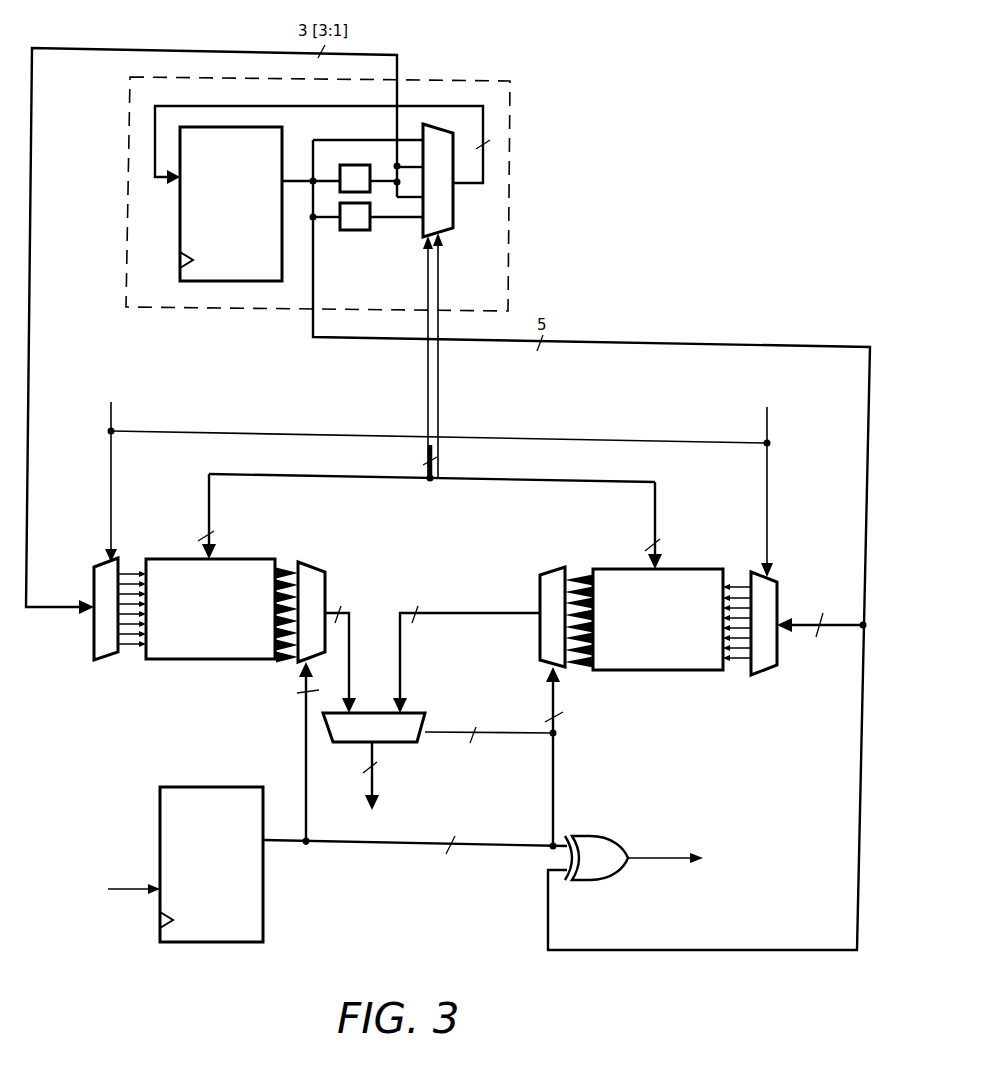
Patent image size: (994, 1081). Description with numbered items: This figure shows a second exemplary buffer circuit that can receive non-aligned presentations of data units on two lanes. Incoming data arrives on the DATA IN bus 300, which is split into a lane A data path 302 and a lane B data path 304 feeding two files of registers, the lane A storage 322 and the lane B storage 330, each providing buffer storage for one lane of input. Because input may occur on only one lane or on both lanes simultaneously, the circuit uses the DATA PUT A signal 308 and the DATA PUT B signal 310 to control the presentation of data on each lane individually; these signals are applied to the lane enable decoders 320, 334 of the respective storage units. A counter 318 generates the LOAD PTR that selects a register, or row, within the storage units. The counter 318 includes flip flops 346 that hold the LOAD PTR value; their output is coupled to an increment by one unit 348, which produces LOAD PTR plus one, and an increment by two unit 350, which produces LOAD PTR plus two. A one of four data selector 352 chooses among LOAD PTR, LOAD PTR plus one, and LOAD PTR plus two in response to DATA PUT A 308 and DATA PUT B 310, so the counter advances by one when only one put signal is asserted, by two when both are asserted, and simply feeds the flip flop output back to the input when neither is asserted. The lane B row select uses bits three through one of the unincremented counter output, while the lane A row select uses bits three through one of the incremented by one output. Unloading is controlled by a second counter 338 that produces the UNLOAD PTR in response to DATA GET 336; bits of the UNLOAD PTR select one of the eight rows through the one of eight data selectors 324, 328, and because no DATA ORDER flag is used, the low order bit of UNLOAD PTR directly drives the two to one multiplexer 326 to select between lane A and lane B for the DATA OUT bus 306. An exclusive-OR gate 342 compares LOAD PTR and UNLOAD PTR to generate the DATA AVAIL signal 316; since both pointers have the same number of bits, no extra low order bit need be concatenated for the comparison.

The data input bus 300 is at (445, 470).
The lane A data bus 302 is at (207, 523).
The lane B data bus 304 is at (652, 532).
The DATA OUT bus 306 is at (375, 778).
The DATA PUT A 308 is at (111, 406).
The DATA PUT B 310 is at (770, 412).
The DATA AVAIL 316 is at (660, 858).
The counter 318 is at (127, 239).
The lane A enable decoder 320 is at (107, 660).
The file of registers 322 is at (215, 660).
The lane A output multiplexer 324 is at (315, 560).
The output multiplexer 326 is at (415, 712).
The lane B output multiplexer 328 is at (548, 567).
The file of registers 330 is at (657, 671).
The lane B enable decoder 334 is at (757, 675).
The data get signal 336 is at (133, 887).
The second counter 338 is at (263, 893).
The exclusive OR gate 342 is at (585, 881).
The flip flops 346 is at (180, 232).
The increment by one unit 348 is at (354, 165).
The increment by two unit 350 is at (355, 231).
The one of four data selector 352 is at (456, 207).